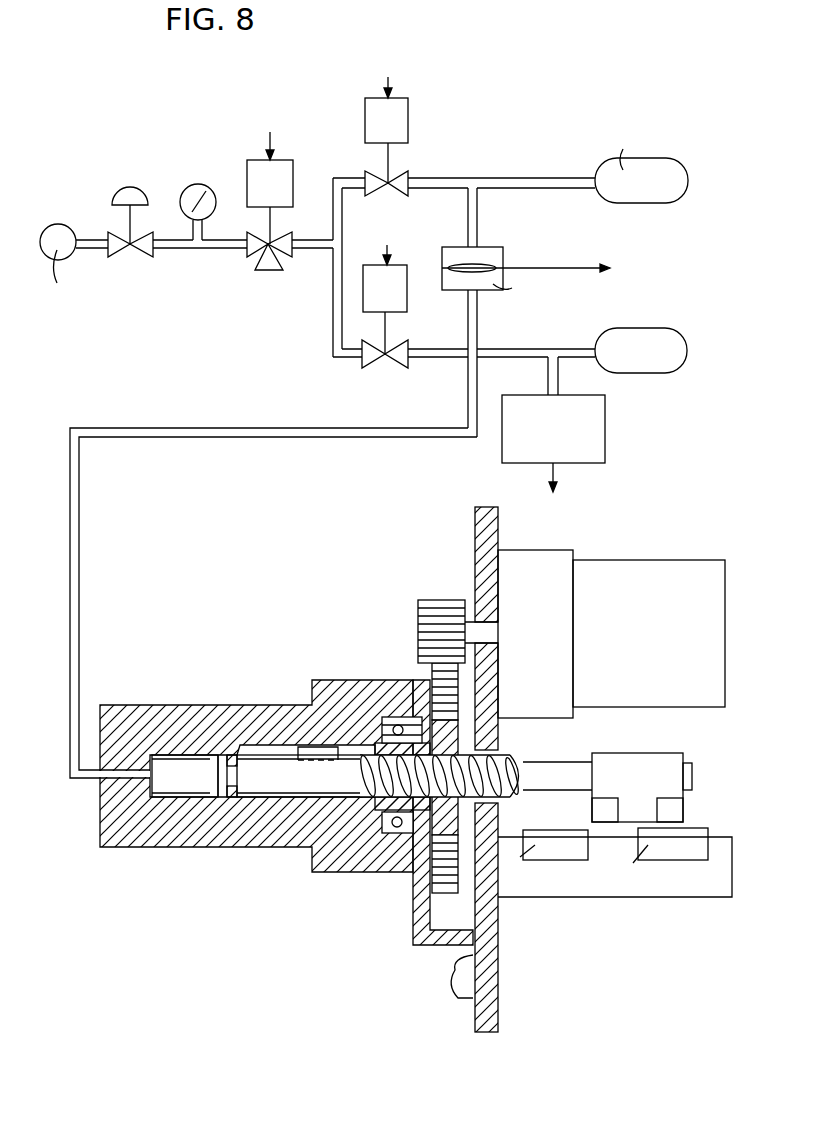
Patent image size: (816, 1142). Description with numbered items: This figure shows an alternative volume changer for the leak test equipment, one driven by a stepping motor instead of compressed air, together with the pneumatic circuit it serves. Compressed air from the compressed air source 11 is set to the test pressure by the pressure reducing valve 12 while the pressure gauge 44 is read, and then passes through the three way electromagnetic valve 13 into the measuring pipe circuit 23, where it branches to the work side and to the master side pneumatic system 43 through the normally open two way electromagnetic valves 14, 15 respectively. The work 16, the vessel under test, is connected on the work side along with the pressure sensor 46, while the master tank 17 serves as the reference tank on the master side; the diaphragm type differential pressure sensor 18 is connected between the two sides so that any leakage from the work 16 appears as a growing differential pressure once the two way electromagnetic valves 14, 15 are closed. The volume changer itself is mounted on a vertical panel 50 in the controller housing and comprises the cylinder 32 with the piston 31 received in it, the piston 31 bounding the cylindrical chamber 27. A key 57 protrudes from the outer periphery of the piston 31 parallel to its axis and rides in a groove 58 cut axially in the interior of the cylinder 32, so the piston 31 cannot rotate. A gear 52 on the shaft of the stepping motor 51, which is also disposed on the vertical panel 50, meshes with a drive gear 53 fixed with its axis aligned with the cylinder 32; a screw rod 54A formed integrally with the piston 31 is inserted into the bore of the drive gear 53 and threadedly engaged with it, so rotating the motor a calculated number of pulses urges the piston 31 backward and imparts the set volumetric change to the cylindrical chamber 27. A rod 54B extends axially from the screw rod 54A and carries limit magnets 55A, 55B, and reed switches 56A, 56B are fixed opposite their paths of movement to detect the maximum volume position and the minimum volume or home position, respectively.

The compressed air source 11 is at (66, 224).
The pressure reducing valve 12 is at (143, 188).
The pressure gauge 44 is at (207, 183).
The three way electromagnetic valve 13 is at (293, 166).
The two way electromagnetic valve 15 is at (411, 105).
The master side pneumatic system 43 is at (448, 176).
The measuring pipe circuit 23 is at (341, 224).
The diaphragm type differential pressure sensor 18 is at (490, 243).
The two way electromagnetic valve 14 is at (412, 270).
The master tank 17 is at (657, 160).
The work 16 is at (653, 328).
The pressure sensor 46 is at (605, 407).
The cylinder 32 is at (208, 704).
The cylindrical chamber 27 is at (187, 757).
The groove 58 is at (260, 745).
The piston 31 is at (277, 780).
The key 57 is at (310, 747).
The drive gear 53 is at (442, 865).
The vertical panel 50 is at (500, 984).
The gear 52 is at (443, 602).
The stepping motor 51 is at (642, 575).
The screw rod 54A is at (365, 777).
The rod 54B is at (553, 770).
The limit magnet 55B is at (597, 809).
The limit magnet 55A is at (682, 809).
The reed switch 56B is at (575, 853).
The reed switch 56A is at (693, 853).